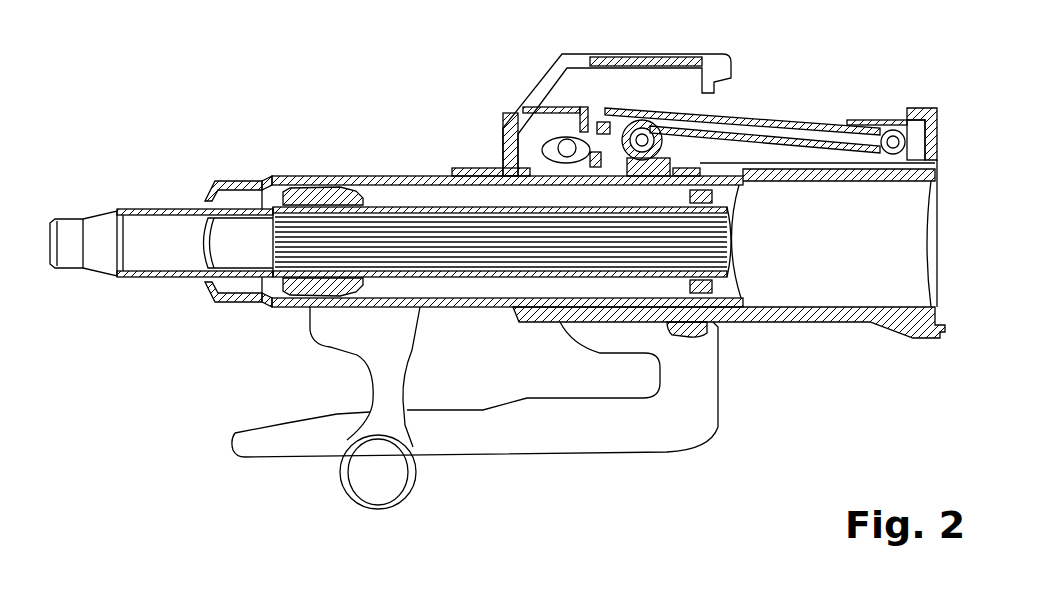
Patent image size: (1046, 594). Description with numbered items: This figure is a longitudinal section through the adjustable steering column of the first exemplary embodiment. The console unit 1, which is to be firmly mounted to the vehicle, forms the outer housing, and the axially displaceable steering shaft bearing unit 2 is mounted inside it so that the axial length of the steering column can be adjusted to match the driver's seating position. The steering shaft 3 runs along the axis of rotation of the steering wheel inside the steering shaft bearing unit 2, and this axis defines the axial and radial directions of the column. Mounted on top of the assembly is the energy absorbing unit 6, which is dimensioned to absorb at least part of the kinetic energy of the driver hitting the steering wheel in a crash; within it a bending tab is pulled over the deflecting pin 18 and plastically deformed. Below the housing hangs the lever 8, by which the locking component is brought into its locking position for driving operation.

The console unit 1 is at (843, 316).
The steering shaft bearing unit 2 is at (400, 190).
The steering shaft 3 is at (160, 200).
The energy absorbing unit 6 is at (803, 125).
The lever 8 is at (608, 433).
The deflecting pin 18 is at (644, 136).